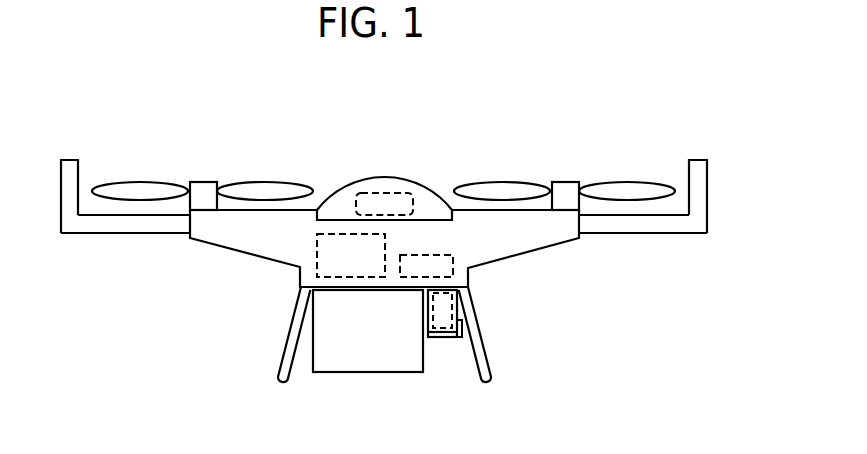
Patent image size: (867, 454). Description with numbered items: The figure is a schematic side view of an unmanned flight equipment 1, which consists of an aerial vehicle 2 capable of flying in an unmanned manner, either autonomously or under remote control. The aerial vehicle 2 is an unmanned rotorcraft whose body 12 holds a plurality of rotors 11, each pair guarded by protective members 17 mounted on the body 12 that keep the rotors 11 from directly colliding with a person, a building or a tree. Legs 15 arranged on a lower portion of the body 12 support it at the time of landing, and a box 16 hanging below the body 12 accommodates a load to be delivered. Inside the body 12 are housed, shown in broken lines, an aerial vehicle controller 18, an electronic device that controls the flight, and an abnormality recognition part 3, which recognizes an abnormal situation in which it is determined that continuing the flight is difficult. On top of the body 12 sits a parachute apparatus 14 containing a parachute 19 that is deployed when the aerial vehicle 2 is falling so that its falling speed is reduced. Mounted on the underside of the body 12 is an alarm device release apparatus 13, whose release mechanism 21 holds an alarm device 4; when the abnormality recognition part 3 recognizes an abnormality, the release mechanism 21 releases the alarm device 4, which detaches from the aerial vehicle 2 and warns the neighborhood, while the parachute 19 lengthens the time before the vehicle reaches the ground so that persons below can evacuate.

The unmanned flight equipment 1 is at (660, 136).
The aerial vehicle 2 is at (436, 152).
The abnormality recognition part 3 is at (485, 268).
The alarm device 4 is at (458, 312).
The rotors 11 is at (241, 182).
The body 12 is at (224, 248).
The alarm device release apparatus 13 is at (443, 352).
The parachute apparatus 14 is at (388, 177).
The legs 15 is at (278, 368).
The box 16 is at (360, 372).
The protective members 17 is at (98, 233).
The aerial vehicle controller 18 is at (317, 258).
The parachute 19 is at (365, 192).
The release mechanism 21 is at (460, 340).